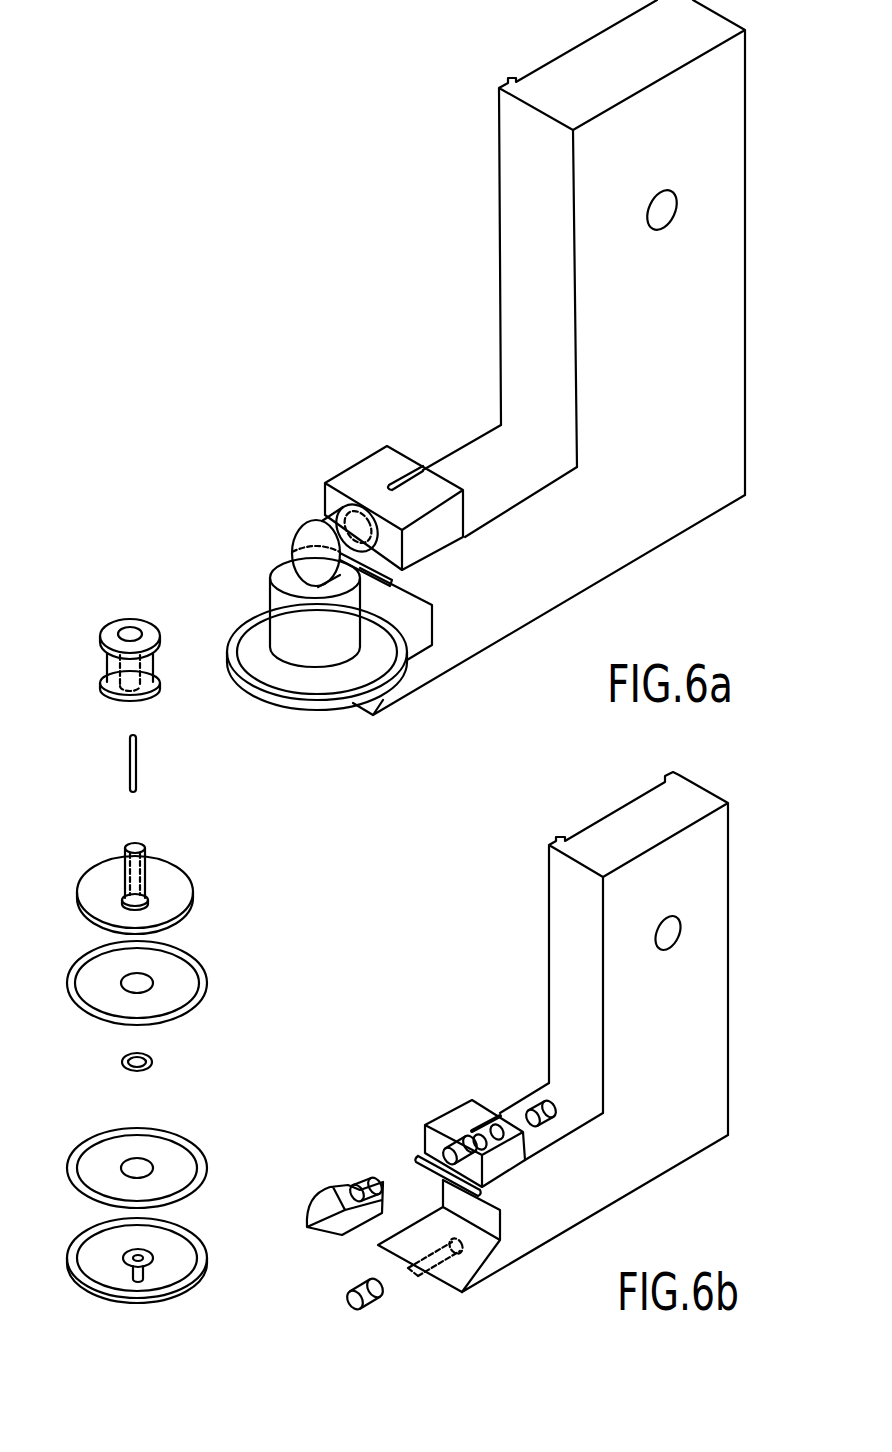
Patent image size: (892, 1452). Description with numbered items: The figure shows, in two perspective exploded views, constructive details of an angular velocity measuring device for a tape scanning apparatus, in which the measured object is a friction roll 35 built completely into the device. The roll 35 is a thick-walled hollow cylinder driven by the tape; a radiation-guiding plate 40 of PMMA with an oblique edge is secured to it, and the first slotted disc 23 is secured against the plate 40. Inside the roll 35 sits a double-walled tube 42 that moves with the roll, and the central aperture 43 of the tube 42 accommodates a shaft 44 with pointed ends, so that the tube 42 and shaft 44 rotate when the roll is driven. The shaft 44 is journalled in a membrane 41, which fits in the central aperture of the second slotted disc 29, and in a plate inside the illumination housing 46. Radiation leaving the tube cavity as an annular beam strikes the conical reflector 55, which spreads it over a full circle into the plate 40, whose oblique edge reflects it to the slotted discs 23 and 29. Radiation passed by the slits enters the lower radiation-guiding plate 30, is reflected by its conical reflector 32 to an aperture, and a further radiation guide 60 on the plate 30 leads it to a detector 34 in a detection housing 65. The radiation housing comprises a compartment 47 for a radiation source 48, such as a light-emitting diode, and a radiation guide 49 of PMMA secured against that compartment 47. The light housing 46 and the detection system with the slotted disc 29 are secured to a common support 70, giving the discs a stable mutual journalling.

In FIG. 6A, the common support 70 is at (493, 617).
In FIG. 6B, the common support 70 is at (530, 1210).
In FIG. 6A, the illumination housing 46 is at (305, 497).
In FIG. 6A, the friction roll 35 is at (290, 612).
In FIG. 6A, the shaft 44 is at (128, 762).
In FIG. 6A, the radiation-guiding plate 40 is at (163, 877).
In FIG. 6A, the double-walled tube 42 is at (120, 868).
In FIG. 6A, the central aperture 43 is at (130, 845).
In FIG. 6A, the conical reflector 55 is at (123, 903).
In FIG. 6A, the first slotted disc 23 is at (182, 983).
In FIG. 6A, the membrane 41 is at (152, 1064).
In FIG. 6A, the slotted disc 29 is at (175, 1153).
In FIG. 6A, the radiation-guiding plate 30 is at (100, 1250).
In FIG. 6A, the conical reflector 32 is at (132, 1263).
In FIG. 6A, the radiation guide 60 is at (145, 1280).
In FIG. 6B, the detector 34 is at (470, 1247).
In FIG. 6B, the compartment 47 is at (455, 1125).
In FIG. 6B, the radiation source 48 is at (505, 1112).
In FIG. 6B, the radiation guide 49 is at (338, 1185).
In FIG. 6B, the detection housing 65 is at (368, 1300).